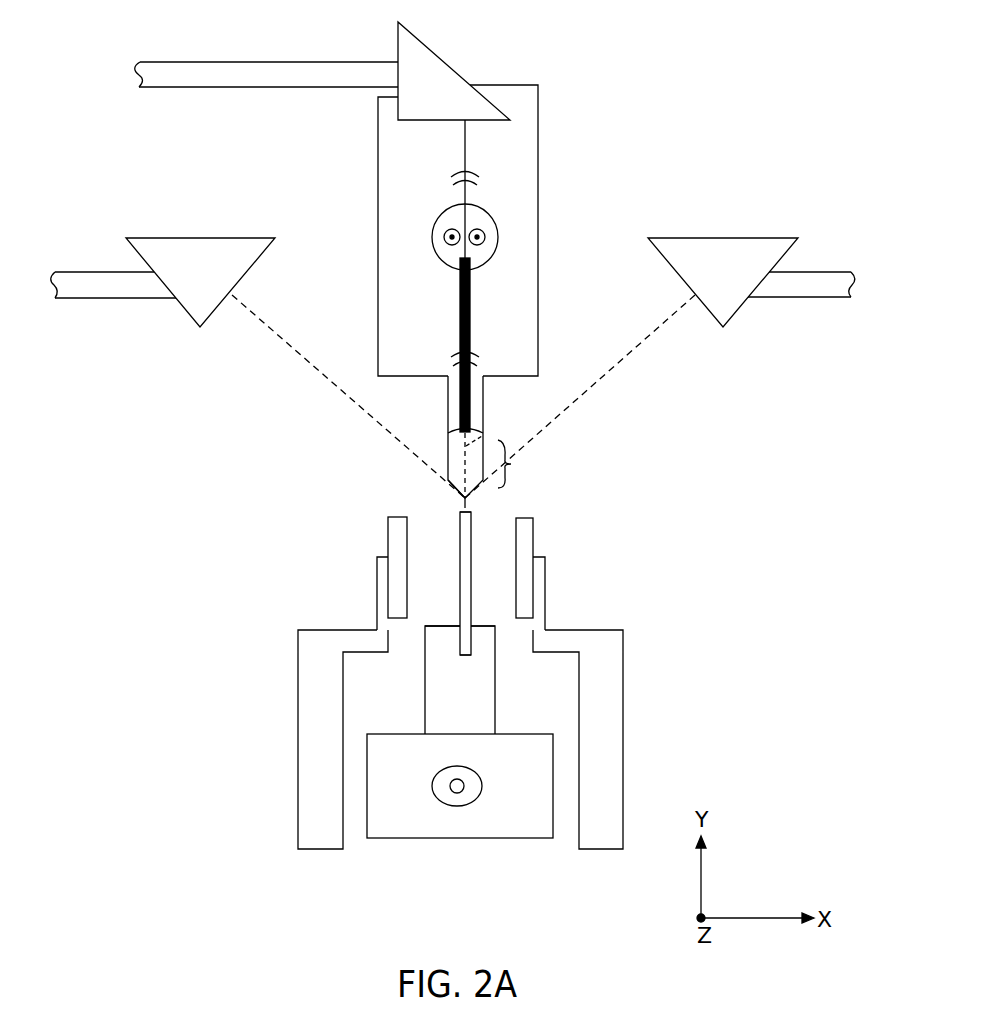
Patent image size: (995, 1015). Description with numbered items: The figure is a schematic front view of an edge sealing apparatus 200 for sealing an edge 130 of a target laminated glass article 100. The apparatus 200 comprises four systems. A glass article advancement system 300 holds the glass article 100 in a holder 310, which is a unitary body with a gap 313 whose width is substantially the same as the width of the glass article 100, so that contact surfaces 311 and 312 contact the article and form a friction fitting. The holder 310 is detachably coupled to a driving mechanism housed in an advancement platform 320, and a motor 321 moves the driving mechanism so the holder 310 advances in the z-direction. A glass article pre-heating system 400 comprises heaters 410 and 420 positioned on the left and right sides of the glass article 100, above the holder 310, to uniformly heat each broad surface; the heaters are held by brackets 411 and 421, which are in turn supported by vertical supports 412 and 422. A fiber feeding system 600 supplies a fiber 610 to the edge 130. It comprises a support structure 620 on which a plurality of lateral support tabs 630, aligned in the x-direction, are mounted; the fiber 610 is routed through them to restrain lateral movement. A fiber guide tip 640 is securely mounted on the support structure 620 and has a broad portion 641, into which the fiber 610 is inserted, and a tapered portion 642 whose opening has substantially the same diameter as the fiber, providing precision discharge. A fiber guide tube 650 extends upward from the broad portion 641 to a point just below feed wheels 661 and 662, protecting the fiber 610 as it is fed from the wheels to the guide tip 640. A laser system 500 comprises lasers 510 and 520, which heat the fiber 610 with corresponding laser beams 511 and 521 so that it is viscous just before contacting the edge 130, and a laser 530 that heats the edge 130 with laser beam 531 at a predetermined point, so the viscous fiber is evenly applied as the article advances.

The laminated glass article 100 is at (467, 583).
The edge 130 is at (470, 506).
The edge sealing apparatus 200 is at (688, 94).
The glass article advancement system 300 is at (438, 853).
The holder 310 is at (487, 683).
The contact surface 311 is at (458, 633).
The contact surface 312 is at (475, 648).
The gap 313 is at (467, 656).
The advancement platform 320 is at (508, 829).
The motor 321 is at (482, 780).
The glass article pre-heating system 400 is at (667, 713).
The heater 410 is at (393, 533).
The bracket 411 is at (380, 590).
The vertical support 412 is at (303, 716).
The heater 420 is at (527, 540).
The bracket 421 is at (541, 603).
The vertical support 422 is at (618, 672).
The laser system 500 is at (230, 155).
The laser 510 is at (187, 315).
The laser beam 511 is at (300, 360).
The laser 520 is at (740, 310).
The laser beam 521 is at (613, 370).
The laser 530 is at (440, 57).
The laser beam 531 is at (484, 435).
The fiber feeding system 600 is at (572, 158).
The fiber 610 is at (467, 192).
The support structure 620 is at (531, 275).
The lateral support tabs 630 is at (455, 172).
The fiber guide tip 640 is at (450, 448).
The broad portion 641 is at (521, 464).
The tapered portion 642 is at (452, 481).
The fiber guide tube 650 is at (472, 333).
The feed wheel 661 is at (486, 237).
The feed wheel 662 is at (444, 239).